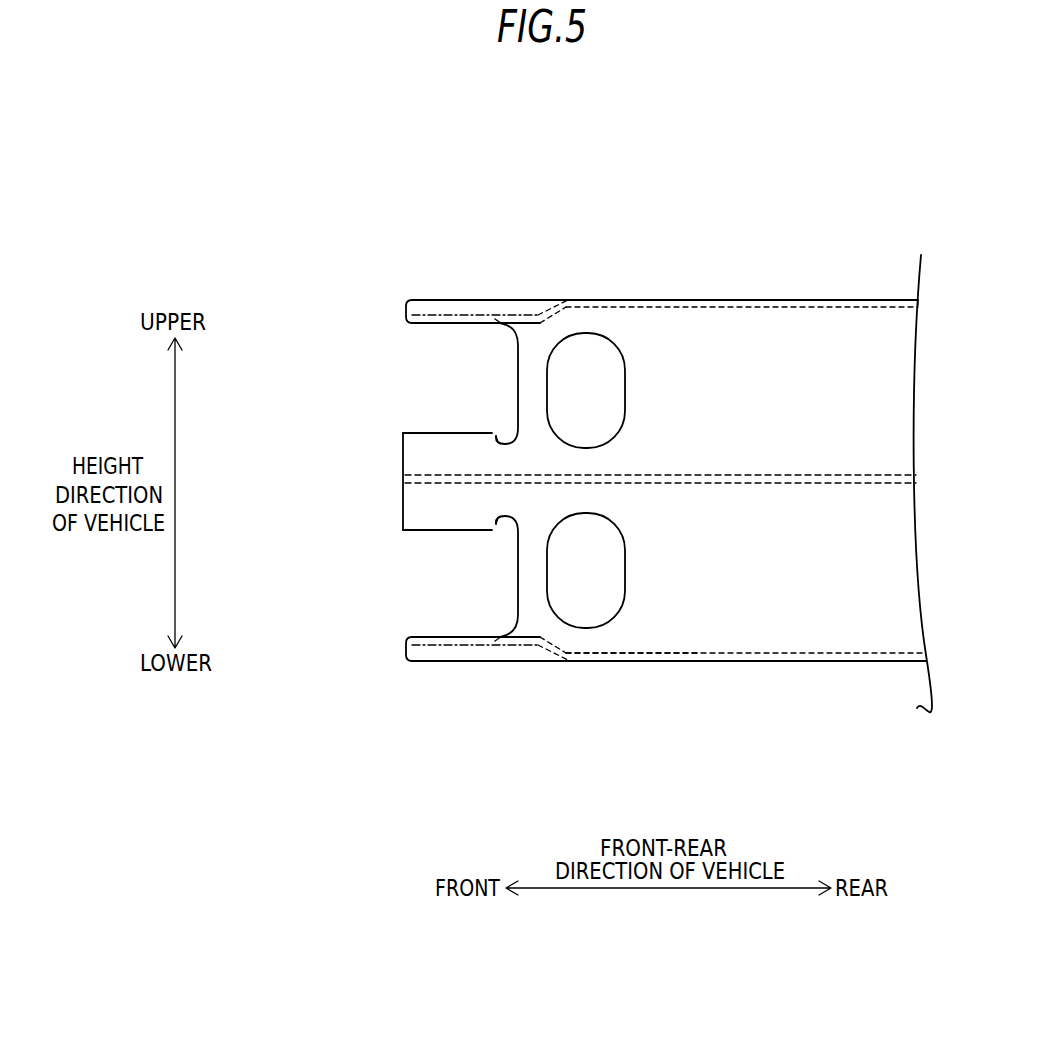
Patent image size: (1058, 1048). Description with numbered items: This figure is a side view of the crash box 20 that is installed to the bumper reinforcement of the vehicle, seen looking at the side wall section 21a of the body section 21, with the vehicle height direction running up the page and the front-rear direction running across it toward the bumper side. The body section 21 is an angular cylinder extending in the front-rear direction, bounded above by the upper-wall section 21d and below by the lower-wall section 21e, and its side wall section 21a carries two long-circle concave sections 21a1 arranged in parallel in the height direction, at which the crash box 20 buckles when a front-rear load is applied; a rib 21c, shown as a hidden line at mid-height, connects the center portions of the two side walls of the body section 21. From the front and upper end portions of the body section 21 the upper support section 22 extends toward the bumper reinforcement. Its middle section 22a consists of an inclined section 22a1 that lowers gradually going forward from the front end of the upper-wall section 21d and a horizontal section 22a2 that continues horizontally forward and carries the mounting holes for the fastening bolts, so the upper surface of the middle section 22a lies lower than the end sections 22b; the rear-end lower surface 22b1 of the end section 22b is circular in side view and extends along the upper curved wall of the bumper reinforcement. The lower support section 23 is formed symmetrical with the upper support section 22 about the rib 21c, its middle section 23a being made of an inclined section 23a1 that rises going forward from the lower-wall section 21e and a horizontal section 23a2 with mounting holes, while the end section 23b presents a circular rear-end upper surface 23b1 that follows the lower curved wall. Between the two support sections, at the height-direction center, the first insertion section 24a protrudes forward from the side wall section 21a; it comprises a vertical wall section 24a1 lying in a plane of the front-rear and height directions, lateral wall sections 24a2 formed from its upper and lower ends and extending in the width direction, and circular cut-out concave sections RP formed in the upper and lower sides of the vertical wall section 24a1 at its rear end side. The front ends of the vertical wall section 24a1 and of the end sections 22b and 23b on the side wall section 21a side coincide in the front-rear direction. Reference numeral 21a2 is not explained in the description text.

The crash box 20 is at (621, 243).
The body section 21 is at (752, 294).
The side wall section 21a is at (840, 640).
The concave section 21a1 is at (625, 385).
The notch 21a2 is at (516, 357).
The rib 21c is at (770, 476).
The upper-wall section 21d is at (852, 299).
The lower-wall section 21e is at (725, 661).
The upper support section 22 is at (456, 257).
The middle section 22a is at (490, 261).
The inclined section 22a1 is at (540, 275).
The horizontal section 22a2 is at (468, 314).
The end section 22b is at (418, 298).
The rear-end lower surface 22b1 is at (500, 323).
The lower support section 23 is at (461, 715).
The middle section 23a is at (496, 708).
The inclined section 23a1 is at (545, 689).
The horizontal section 23a2 is at (478, 662).
The end section 23b is at (413, 662).
The rear-end upper surface 23b1 is at (500, 637).
The first insertion section 24a is at (373, 496).
The vertical wall section 24a1 is at (506, 503).
The lateral wall section 24a2 is at (412, 433).
The concave section RP is at (497, 438).